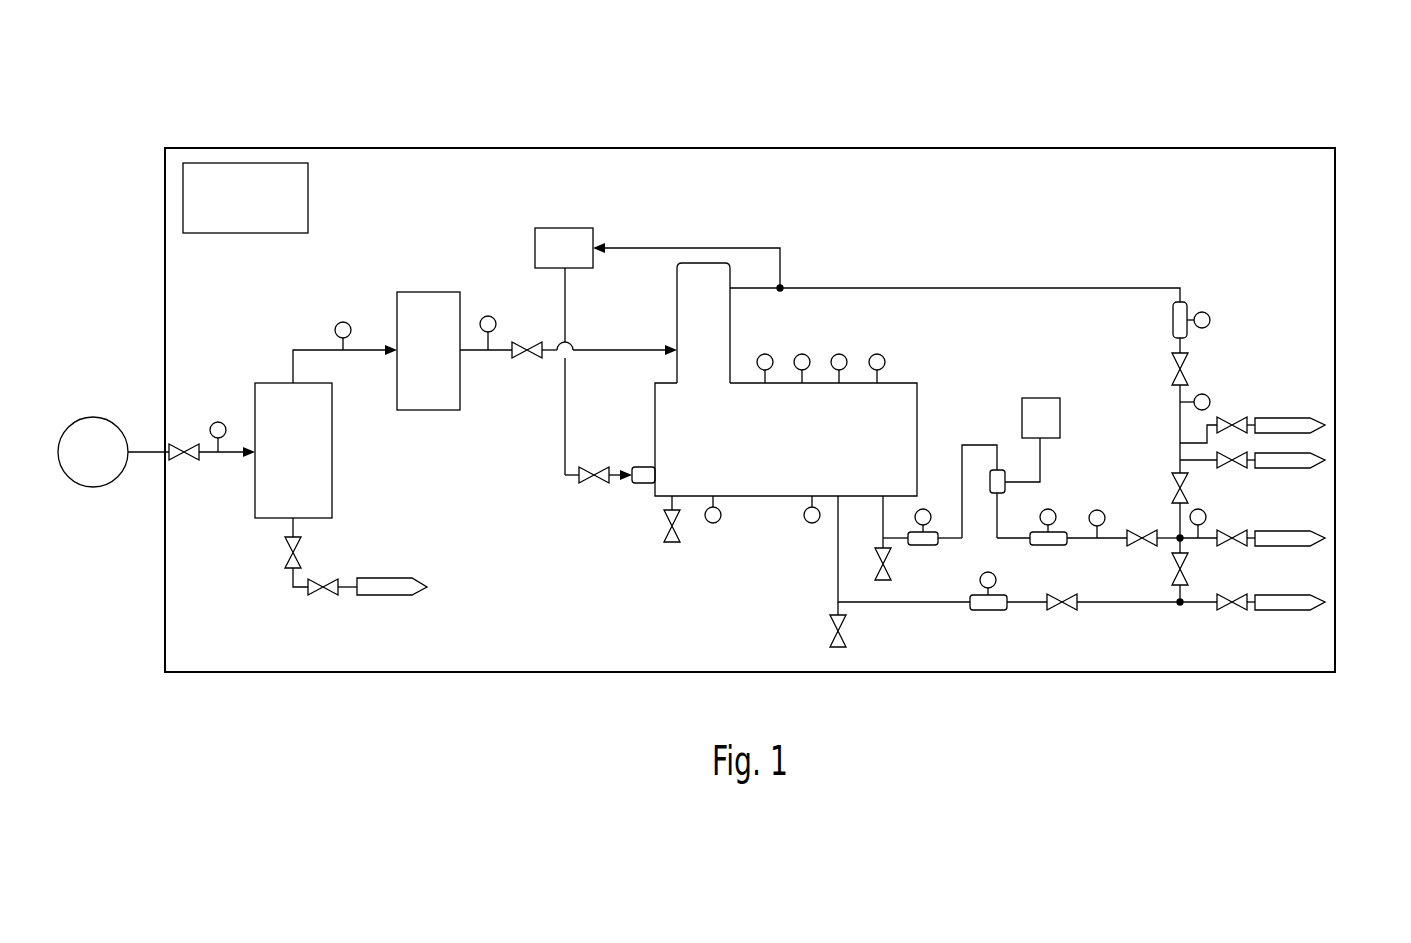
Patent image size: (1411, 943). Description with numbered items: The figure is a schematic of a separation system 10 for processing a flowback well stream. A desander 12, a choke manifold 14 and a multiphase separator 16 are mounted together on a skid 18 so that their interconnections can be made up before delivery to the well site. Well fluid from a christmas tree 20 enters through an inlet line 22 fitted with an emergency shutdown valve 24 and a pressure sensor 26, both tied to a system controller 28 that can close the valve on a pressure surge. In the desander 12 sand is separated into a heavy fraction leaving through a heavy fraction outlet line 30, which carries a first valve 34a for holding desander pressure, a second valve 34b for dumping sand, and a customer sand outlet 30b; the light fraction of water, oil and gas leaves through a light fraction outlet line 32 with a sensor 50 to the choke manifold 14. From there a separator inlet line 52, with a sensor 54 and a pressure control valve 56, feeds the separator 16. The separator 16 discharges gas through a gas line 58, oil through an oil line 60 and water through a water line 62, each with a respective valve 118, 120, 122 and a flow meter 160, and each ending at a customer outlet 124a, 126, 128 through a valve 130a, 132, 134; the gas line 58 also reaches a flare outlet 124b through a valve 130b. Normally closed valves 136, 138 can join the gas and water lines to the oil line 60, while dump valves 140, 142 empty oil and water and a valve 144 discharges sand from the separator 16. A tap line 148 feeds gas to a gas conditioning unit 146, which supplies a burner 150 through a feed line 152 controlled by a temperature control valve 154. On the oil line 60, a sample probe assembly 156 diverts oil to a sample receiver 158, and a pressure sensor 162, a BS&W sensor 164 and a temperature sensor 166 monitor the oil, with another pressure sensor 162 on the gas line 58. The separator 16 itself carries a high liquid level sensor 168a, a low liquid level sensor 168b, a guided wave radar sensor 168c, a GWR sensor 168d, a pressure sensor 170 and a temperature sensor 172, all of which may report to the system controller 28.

The separation system 10 is at (145, 108).
The desander 12 is at (280, 465).
The choke manifold 14 is at (416, 367).
The multiphase separator 16 is at (786, 450).
The skid 18 is at (1071, 205).
The christmas tree 20 is at (79, 467).
The inlet line 22 is at (222, 458).
The valve 24 is at (184, 445).
The sensor 26 is at (219, 421).
The system controller 28 is at (231, 214).
The heavy fraction outlet line 30 is at (291, 526).
The customer sand outlet 30b is at (398, 596).
The light fraction outlet line 32 is at (306, 349).
The first valve 34a is at (300, 553).
The second valve 34b is at (326, 596).
The sensor 50 is at (343, 321).
The separator inlet line 52 is at (606, 348).
The sensor 54 is at (488, 315).
The valve 56 is at (530, 360).
The gas line 58 is at (886, 288).
The oil line 60 is at (975, 445).
The water line 62 is at (905, 604).
The valve 118 is at (1173, 372).
The valve 120 is at (1142, 547).
The valve 122 is at (1062, 612).
The customer outlet 124a is at (1324, 455).
The outlet 124b is at (1324, 421).
The customer outlet 126 is at (1324, 534).
The customer outlet 128 is at (1324, 598).
The valve 130a is at (1236, 469).
The valve 130b is at (1238, 419).
The valve 132 is at (1236, 547).
The valve 134 is at (1236, 611).
The valve 136 is at (1174, 490).
The valve 138 is at (1184, 565).
The dump valve 140 is at (878, 565).
The dump valve 142 is at (830, 632).
The valve 144 is at (669, 523).
The gas conditioning unit 146 is at (572, 228).
The tap line 148 is at (680, 248).
The burner 150 is at (644, 485).
The feed line 152 is at (564, 432).
The valve 154 is at (596, 484).
The sample probe assembly 156 is at (994, 490).
The sample receiver 158 is at (1040, 398).
The flow meter 160 is at (1057, 546).
The pressure sensor 162 is at (1206, 394).
The BS&W sensor 164 is at (920, 546).
The temperature sensor 166 is at (1097, 509).
The high liquid level sensor 168a is at (803, 353).
The low liquid level sensor 168b is at (811, 524).
The guided wave radar sensor 168c is at (843, 354).
The GWR sensor 168d is at (882, 355).
The pressure sensor 170 is at (765, 353).
The temperature sensor 172 is at (713, 524).